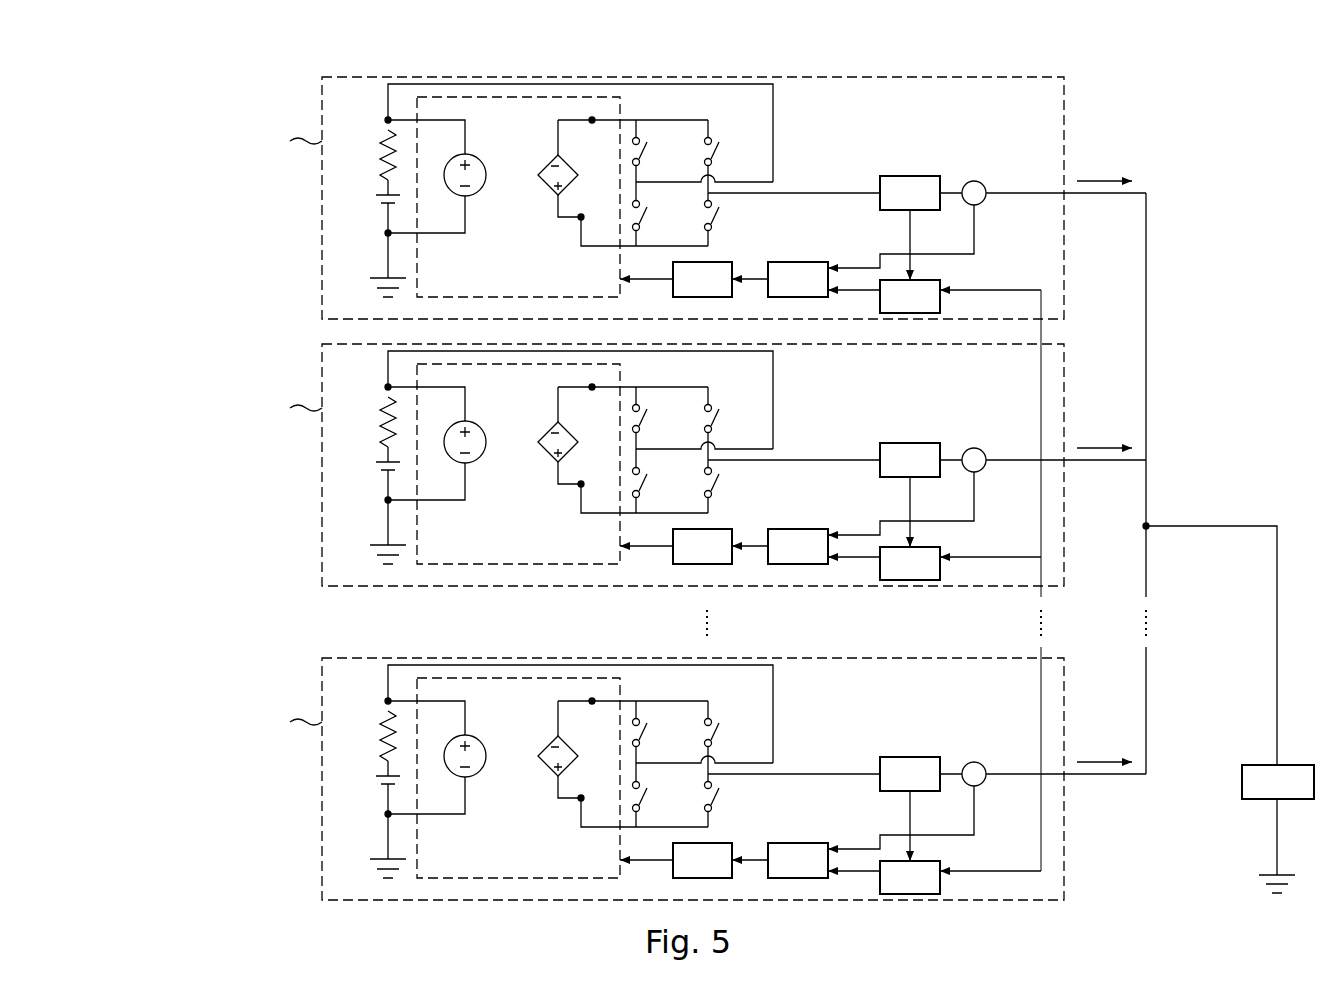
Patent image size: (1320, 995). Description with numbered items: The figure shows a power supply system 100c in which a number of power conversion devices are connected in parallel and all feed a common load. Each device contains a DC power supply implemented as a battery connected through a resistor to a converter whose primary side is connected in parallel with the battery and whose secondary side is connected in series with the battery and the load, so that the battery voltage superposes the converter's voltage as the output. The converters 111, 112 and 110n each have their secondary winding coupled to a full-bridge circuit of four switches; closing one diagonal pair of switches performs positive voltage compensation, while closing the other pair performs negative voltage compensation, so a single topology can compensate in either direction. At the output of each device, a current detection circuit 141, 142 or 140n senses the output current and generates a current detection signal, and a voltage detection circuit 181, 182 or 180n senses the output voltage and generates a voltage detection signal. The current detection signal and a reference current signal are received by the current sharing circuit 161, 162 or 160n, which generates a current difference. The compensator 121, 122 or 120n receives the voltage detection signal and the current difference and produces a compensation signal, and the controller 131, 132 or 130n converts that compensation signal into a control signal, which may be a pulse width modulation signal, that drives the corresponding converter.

The power supply system 100c is at (719, 471).
The converter 111 is at (620, 104).
The converter 112 is at (549, 464).
The converter 110n is at (554, 778).
The compensator 121 is at (798, 279).
The compensator 122 is at (798, 546).
The compensator 120n is at (798, 860).
The controller 131 is at (702, 279).
The controller 132 is at (702, 546).
The controller 130n is at (702, 860).
The current detection circuit 141 is at (910, 193).
The current detection circuit 142 is at (910, 460).
The current detection circuit 140n is at (910, 774).
The current sharing circuit 161 is at (910, 296).
The current sharing circuit 162 is at (910, 563).
The current sharing circuit 160n is at (910, 877).
The voltage detection circuit 181 is at (972, 181).
The voltage detection circuit 182 is at (1043, 444).
The voltage detection circuit 180n is at (1043, 758).